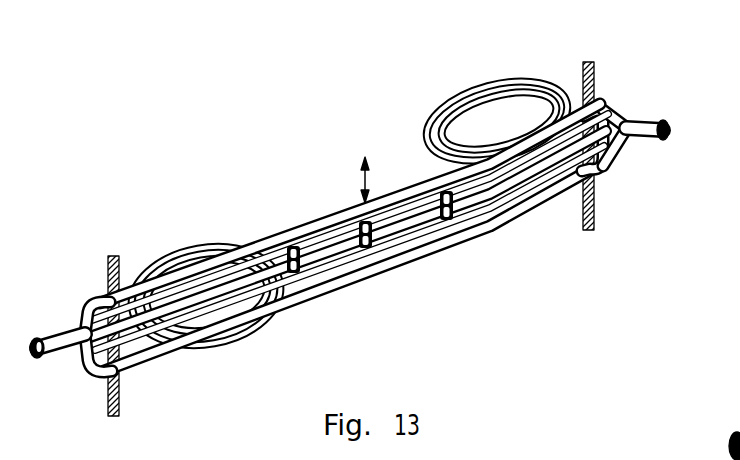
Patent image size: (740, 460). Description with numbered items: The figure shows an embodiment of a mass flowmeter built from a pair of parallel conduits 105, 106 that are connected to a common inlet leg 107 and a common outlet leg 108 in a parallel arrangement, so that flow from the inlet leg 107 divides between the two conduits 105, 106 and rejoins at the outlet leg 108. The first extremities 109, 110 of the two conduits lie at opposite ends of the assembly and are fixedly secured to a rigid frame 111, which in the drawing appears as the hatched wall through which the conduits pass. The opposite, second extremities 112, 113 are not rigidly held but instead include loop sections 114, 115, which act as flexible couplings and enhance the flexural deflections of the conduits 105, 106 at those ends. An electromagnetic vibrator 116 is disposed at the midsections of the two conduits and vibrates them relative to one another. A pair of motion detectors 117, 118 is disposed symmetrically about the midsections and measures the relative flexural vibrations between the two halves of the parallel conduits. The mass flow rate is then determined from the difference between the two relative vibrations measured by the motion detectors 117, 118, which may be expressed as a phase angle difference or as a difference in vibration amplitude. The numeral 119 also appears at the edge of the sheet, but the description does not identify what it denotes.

The parallel conduit 105 is at (330, 218).
The parallel conduit 106 is at (333, 277).
The inlet leg 107 is at (63, 327).
The outlet leg 108 is at (647, 148).
The first extremity 109 is at (138, 278).
The first extremity 110 is at (573, 187).
The rigid frame 111 is at (108, 392).
The second extremity 112 is at (530, 160).
The second extremity 113 is at (148, 323).
The loop section 114 is at (508, 83).
The loop section 115 is at (260, 340).
The electromagnetic vibrator 116 is at (372, 238).
The motion detector 117 is at (287, 250).
The motion detector 118 is at (440, 205).
The rod end 119 is at (724, 446).